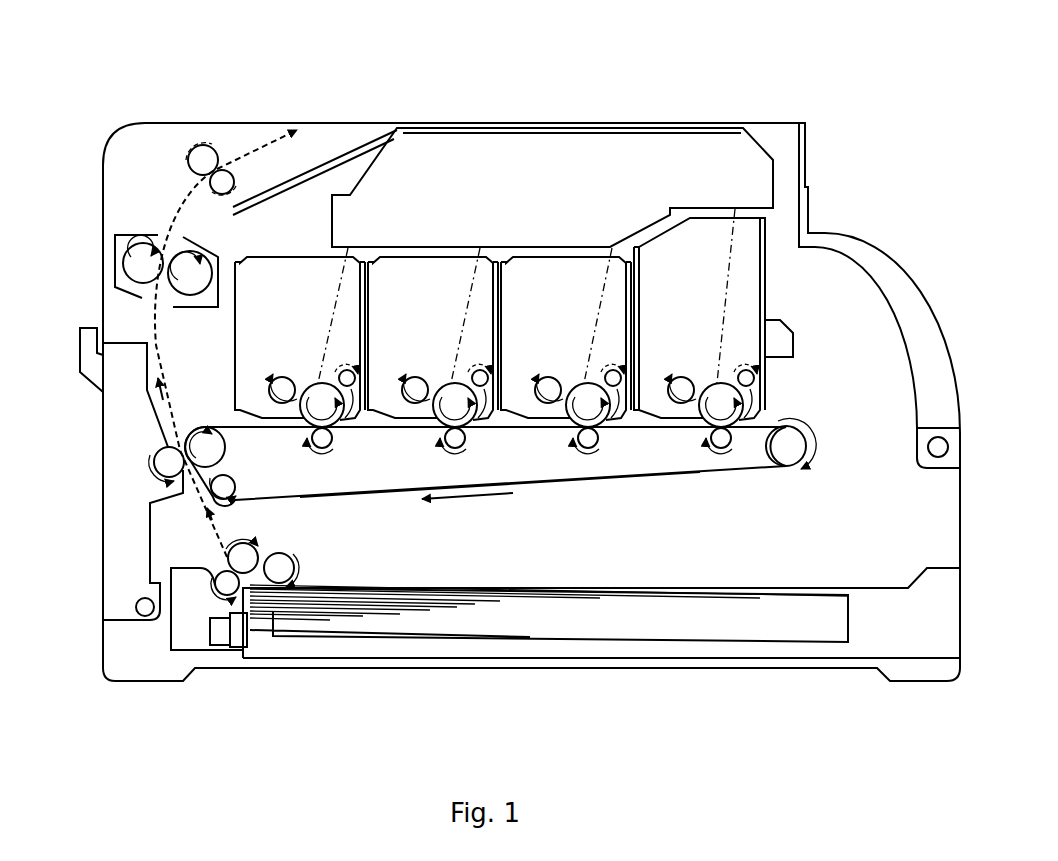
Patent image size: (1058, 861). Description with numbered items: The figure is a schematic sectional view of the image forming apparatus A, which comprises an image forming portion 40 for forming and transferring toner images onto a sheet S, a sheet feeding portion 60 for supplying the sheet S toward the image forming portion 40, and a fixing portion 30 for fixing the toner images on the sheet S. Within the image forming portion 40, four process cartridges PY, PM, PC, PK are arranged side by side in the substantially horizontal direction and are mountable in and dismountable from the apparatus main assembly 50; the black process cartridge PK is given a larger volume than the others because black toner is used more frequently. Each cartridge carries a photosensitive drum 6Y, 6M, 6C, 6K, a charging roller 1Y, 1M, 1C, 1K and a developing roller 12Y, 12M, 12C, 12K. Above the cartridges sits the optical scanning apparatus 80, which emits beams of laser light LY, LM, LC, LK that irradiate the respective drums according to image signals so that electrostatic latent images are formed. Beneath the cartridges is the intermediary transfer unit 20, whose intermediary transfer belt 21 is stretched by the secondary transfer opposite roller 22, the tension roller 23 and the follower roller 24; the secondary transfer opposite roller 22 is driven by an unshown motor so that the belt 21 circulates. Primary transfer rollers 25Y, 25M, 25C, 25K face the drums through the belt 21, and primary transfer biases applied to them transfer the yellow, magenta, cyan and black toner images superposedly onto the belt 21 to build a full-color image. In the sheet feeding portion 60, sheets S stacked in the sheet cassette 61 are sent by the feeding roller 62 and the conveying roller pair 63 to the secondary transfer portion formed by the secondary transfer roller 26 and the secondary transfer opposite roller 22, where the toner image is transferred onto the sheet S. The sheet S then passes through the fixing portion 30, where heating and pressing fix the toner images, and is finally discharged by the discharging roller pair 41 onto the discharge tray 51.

The image forming apparatus A is at (728, 88).
The intermediary transfer unit 20 is at (730, 480).
The intermediary transfer belt 21 is at (600, 480).
The secondary transfer opposite roller 22 is at (208, 438).
The tension roller 23 is at (232, 487).
The follower roller 24 is at (791, 468).
The primary transfer roller 25Y is at (318, 452).
The primary transfer roller 25M is at (447, 443).
The primary transfer roller 25C is at (588, 450).
The primary transfer roller 25K is at (720, 453).
The secondary transfer roller 26 is at (177, 483).
The fixing portion 30 is at (150, 222).
The image forming portion 40 is at (805, 310).
The discharging roller pair 41 is at (193, 143).
The apparatus main assembly 50 is at (103, 418).
The discharge tray 51 is at (350, 150).
The sheet feeding portion 60 is at (403, 567).
The sheet cassette 61 is at (865, 637).
The feeding roller 62 is at (287, 572).
The conveying roller pair 63 is at (265, 548).
The optical scanning apparatus 80 is at (522, 165).
The sheet S is at (460, 624).
The process cartridge PY is at (300, 254).
The process cartridge PM is at (433, 252).
The process cartridge PC is at (558, 248).
The process cartridge PK is at (713, 210).
The laser light LY is at (333, 308).
The laser light LM is at (465, 311).
The laser light LC is at (595, 311).
The laser light LK is at (725, 303).
The photosensitive drum 6Y is at (322, 405).
The photosensitive drum 6M is at (455, 405).
The photosensitive drum 6C is at (588, 405).
The photosensitive drum 6K is at (721, 405).
The developing roller 12Y is at (283, 377).
The developing roller 12M is at (416, 377).
The developing roller 12C is at (548, 377).
The developing roller 12K is at (683, 377).
The charging roller 1Y is at (345, 400).
The charging roller 1M is at (482, 400).
The charging roller 1C is at (612, 400).
The charging roller 1K is at (754, 384).